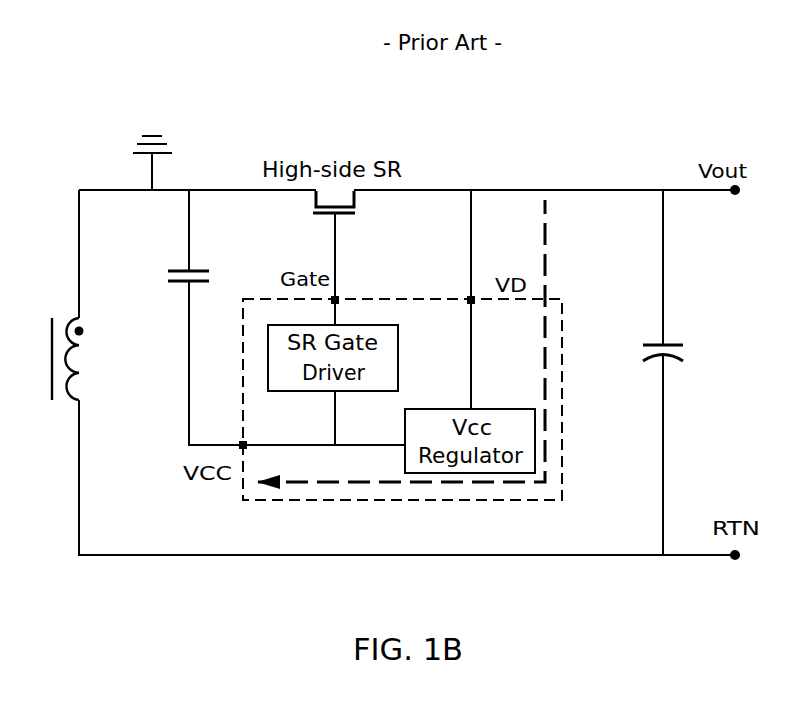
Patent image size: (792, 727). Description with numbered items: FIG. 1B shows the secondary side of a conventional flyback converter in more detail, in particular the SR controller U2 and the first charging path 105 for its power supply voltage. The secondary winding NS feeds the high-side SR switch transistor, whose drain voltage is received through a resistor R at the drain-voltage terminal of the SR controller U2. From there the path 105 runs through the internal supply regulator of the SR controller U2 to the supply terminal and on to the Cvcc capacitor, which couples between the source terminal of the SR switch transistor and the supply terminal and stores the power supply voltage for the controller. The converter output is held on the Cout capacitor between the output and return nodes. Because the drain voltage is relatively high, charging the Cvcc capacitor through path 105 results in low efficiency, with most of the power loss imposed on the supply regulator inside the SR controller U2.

The first path 105 is at (545, 249).
The Cvcc capacitor Cvcc is at (162, 260).
The output capacitor Cout is at (696, 348).
The secondary winding NS is at (88, 359).
The resistor R is at (454, 299).
The SR controller U2 is at (402, 415).